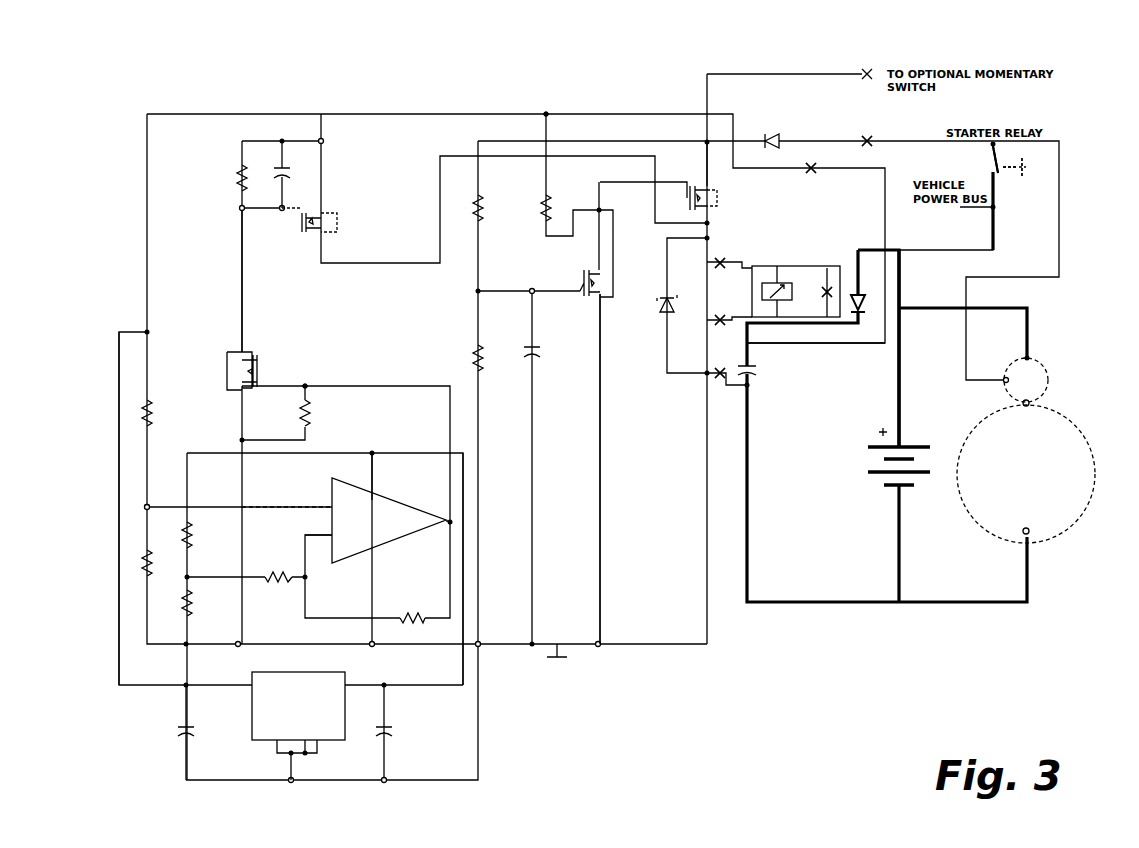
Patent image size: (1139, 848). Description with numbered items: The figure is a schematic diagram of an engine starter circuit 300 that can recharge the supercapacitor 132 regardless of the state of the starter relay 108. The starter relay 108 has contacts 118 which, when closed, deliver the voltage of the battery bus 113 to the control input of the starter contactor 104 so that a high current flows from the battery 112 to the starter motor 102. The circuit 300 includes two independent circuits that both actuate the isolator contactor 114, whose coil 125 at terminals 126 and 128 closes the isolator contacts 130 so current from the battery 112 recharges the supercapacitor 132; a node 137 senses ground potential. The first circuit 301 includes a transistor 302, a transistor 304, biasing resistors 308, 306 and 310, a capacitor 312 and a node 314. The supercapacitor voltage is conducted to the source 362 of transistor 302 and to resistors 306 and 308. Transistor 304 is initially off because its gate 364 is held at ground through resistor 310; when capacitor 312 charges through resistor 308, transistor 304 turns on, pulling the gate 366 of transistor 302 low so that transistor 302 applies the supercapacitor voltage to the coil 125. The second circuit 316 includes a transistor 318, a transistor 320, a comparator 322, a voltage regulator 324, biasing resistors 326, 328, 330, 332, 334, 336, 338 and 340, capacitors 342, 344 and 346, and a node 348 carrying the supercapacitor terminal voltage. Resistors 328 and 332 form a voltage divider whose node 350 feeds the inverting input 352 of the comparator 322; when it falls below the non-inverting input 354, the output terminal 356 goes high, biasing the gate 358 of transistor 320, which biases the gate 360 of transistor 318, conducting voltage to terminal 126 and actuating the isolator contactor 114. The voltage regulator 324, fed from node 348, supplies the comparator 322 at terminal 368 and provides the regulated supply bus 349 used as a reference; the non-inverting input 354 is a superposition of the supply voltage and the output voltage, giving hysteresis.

The engine starter circuit 300 is at (437, 44).
The first circuit 301 is at (548, 110).
The starter motor 102 is at (1026, 474).
The starter contactor 104 is at (1026, 380).
The starter relay 108 is at (1006, 180).
The battery 112 is at (846, 466).
The battery bus 113 is at (901, 404).
The isolator contactor 114 is at (788, 266).
The contacts of starter relay 118 is at (988, 168).
The coil of isolator contactor 125 is at (762, 291).
The terminal of isolator contactor 126 is at (724, 263).
The terminal of isolator contactor 128 is at (718, 325).
The isolator contacts 130 is at (825, 300).
The supercapacitor 132 is at (762, 372).
The node 137 is at (720, 380).
The transistor 302 is at (738, 198).
The transistor 304 is at (616, 282).
The biasing resistor 306 is at (536, 208).
The biasing resistor 308 is at (470, 208).
The biasing resistor 310 is at (470, 352).
The capacitor 312 is at (545, 355).
The node 314 is at (870, 138).
The second circuit 316 is at (116, 700).
The transistor 318 is at (308, 242).
The transistor 320 is at (253, 348).
The comparator 322 is at (389, 520).
The voltage regulator 324 is at (298, 726).
The biasing resistor 326 is at (234, 180).
The biasing resistor 328 is at (162, 414).
The biasing resistor 330 is at (315, 415).
The biasing resistor 332 is at (138, 567).
The biasing resistor 334 is at (284, 562).
The biasing resistor 336 is at (416, 608).
The biasing resistor 338 is at (212, 542).
The biasing resistor 340 is at (212, 605).
The capacitor 342 is at (212, 735).
The capacitor 344 is at (412, 735).
The capacitor 346 is at (296, 178).
The node 348 is at (815, 172).
The regulated supply bus 349 is at (453, 686).
The node 350 is at (147, 507).
The inverting input terminal 352 is at (327, 505).
The non-inverting input terminal 354 is at (328, 534).
The output terminal 356 is at (433, 523).
The gate of transistor 358 is at (270, 386).
The gate of transistor 360 is at (292, 214).
The source of transistor 362 is at (707, 182).
The gate of transistor 364 is at (570, 294).
The gate of transistor 366 is at (690, 184).
The supply terminal 368 is at (373, 498).